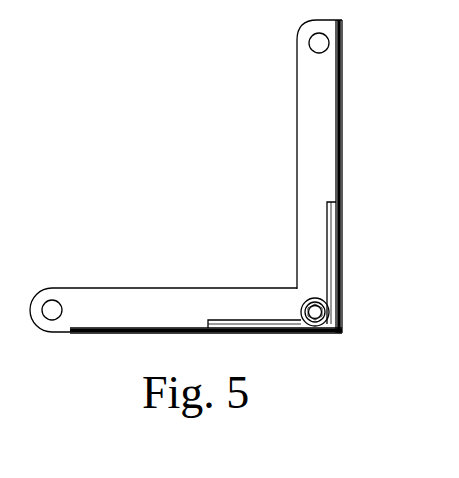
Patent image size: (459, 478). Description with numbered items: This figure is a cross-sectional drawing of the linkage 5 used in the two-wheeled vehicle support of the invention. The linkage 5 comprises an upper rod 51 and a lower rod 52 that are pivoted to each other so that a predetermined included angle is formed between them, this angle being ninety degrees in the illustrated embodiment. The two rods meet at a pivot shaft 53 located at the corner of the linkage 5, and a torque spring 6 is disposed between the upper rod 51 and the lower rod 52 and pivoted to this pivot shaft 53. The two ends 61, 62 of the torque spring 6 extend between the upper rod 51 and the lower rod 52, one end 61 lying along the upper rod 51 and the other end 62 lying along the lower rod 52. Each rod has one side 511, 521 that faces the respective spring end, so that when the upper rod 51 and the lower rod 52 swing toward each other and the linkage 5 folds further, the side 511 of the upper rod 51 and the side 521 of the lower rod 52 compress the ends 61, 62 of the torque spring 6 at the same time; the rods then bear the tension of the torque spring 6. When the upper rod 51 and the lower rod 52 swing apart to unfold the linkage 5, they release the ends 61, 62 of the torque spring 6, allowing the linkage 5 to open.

The linkage 5 is at (366, 196).
The upper rod 51 is at (312, 112).
The side of upper rod 511 is at (341, 133).
The lower rod 52 is at (120, 298).
The side of lower rod 521 is at (130, 336).
The pivot shaft 53 is at (330, 312).
The torque spring 6 is at (300, 306).
The end of torque spring 61 is at (328, 224).
The end of torque spring 62 is at (222, 321).